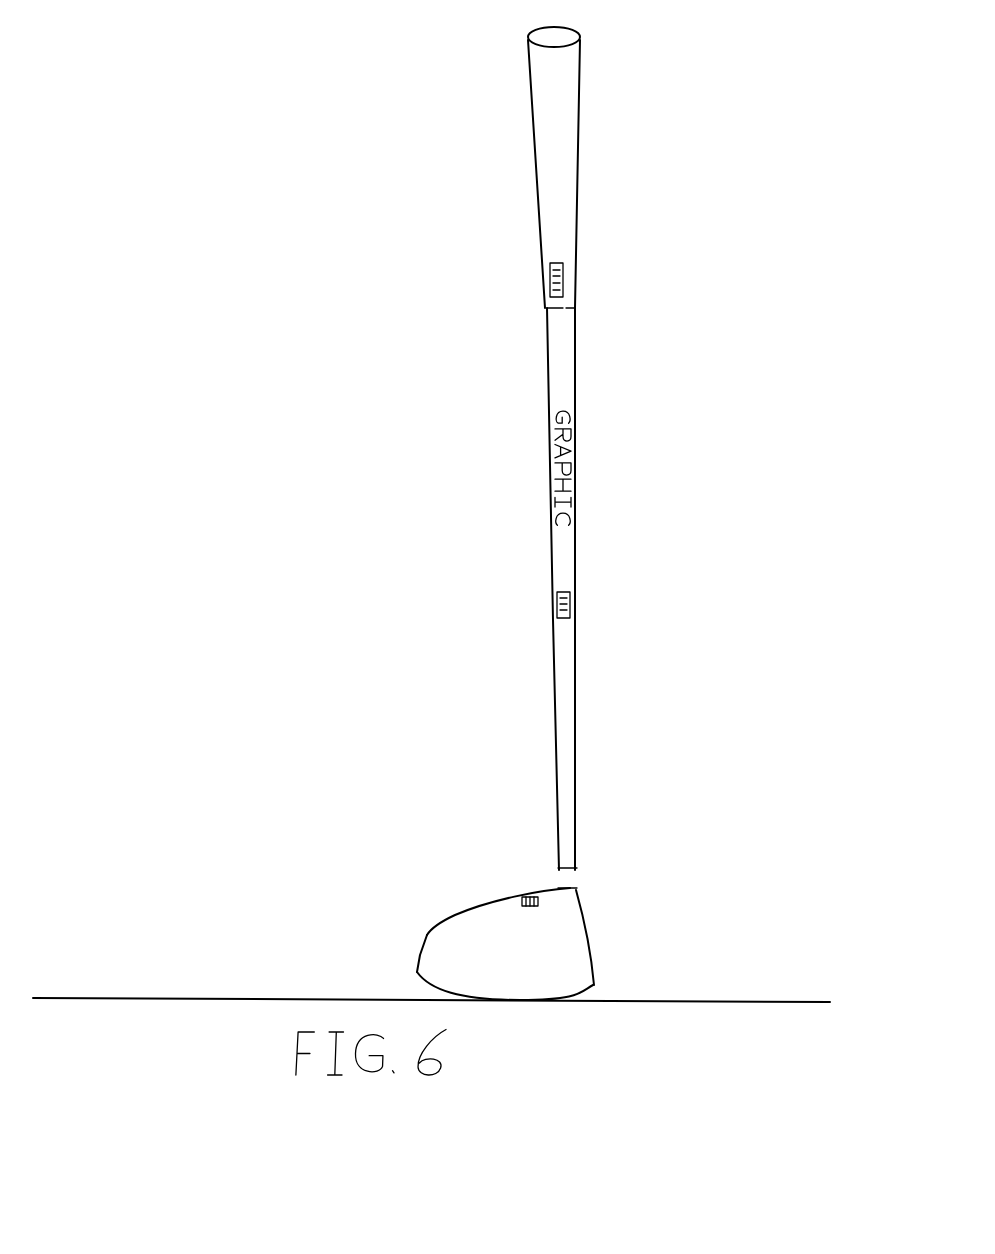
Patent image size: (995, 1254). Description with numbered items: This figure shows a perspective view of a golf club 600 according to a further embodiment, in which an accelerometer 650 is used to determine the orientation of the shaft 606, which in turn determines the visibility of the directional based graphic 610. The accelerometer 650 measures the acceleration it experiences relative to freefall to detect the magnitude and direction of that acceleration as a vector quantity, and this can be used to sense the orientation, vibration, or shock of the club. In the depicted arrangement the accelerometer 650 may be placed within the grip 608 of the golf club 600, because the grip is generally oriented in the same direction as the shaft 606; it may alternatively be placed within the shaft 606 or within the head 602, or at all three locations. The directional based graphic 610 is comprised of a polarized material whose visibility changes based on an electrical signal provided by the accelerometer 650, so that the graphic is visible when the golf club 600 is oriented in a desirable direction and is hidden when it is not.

The golf club 600 is at (547, 513).
The head 602 is at (320, 900).
The shaft 606 is at (542, 598).
The grip 608 is at (503, 96).
The directional based graphic 610 is at (667, 437).
The accelerometer 650 is at (530, 890).